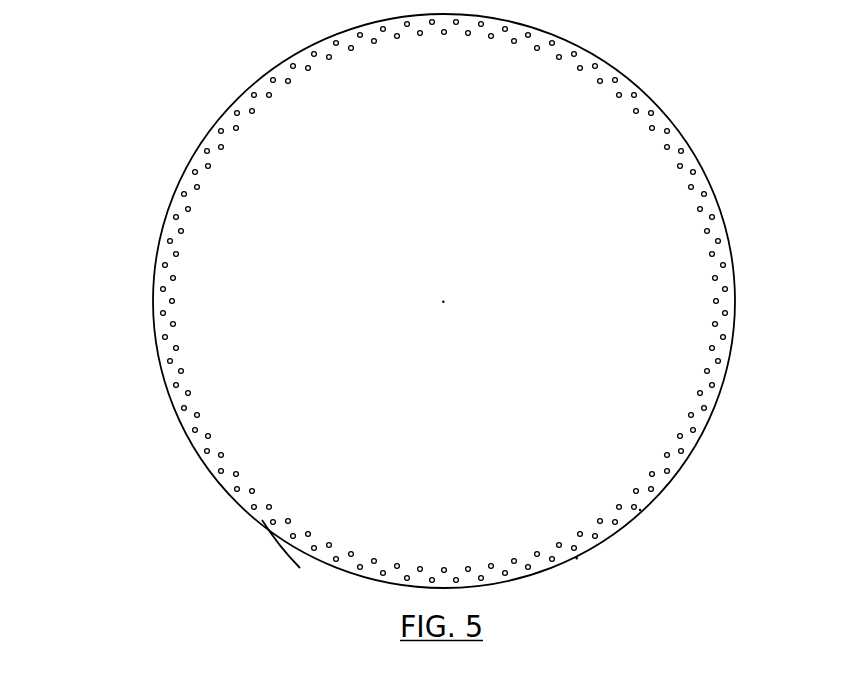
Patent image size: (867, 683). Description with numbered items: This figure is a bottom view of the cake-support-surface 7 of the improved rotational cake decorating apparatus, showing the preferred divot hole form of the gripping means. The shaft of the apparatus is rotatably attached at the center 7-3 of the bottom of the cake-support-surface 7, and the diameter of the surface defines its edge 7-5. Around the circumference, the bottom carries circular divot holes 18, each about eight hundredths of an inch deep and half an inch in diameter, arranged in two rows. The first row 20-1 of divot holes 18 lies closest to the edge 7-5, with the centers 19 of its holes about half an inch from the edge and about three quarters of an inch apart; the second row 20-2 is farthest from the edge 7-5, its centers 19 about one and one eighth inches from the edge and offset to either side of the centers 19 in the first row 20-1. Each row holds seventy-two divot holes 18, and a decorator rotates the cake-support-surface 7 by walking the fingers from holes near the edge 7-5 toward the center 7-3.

The cake-support-surface 7 is at (377, 301).
The center 7-3 is at (451, 274).
The edge 7-5 is at (229, 569).
The circular divot holes 18 is at (627, 605).
The center 19 is at (708, 544).
The first row 20-1 is at (483, 301).
The second row 20-2 is at (487, 301).